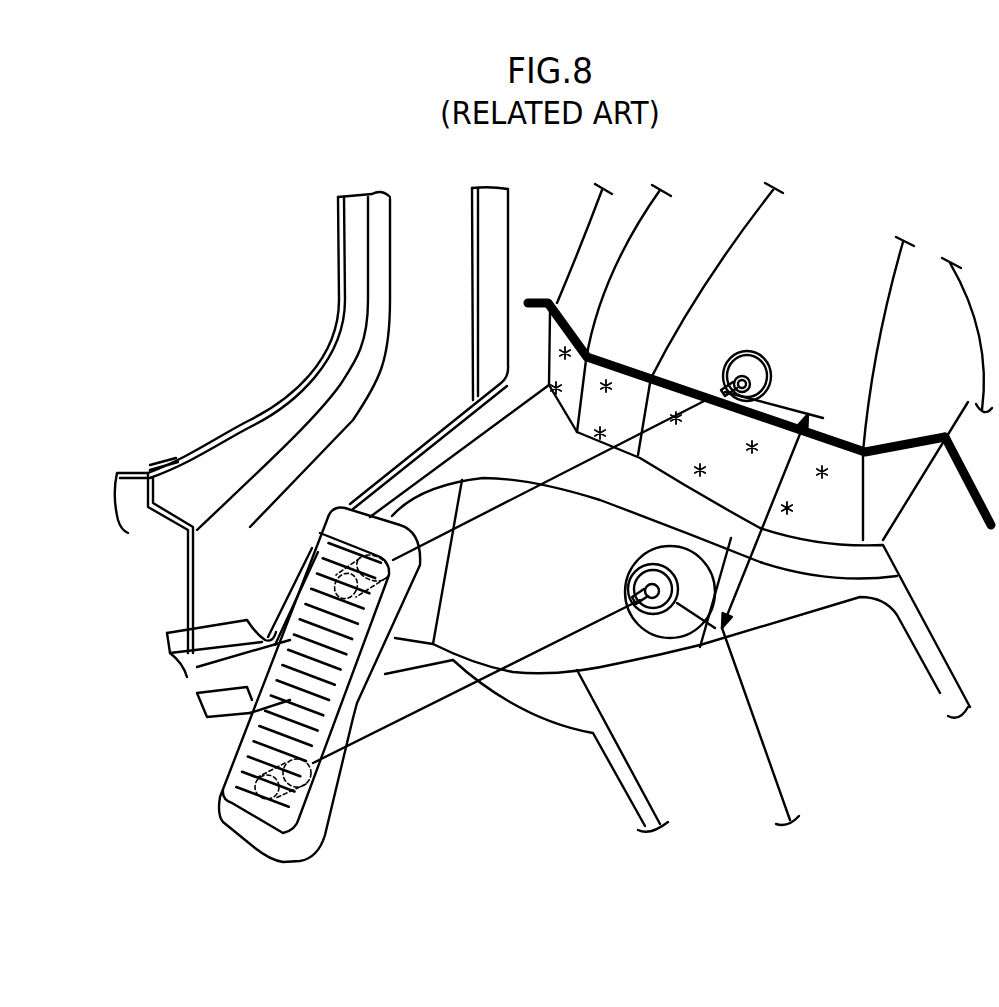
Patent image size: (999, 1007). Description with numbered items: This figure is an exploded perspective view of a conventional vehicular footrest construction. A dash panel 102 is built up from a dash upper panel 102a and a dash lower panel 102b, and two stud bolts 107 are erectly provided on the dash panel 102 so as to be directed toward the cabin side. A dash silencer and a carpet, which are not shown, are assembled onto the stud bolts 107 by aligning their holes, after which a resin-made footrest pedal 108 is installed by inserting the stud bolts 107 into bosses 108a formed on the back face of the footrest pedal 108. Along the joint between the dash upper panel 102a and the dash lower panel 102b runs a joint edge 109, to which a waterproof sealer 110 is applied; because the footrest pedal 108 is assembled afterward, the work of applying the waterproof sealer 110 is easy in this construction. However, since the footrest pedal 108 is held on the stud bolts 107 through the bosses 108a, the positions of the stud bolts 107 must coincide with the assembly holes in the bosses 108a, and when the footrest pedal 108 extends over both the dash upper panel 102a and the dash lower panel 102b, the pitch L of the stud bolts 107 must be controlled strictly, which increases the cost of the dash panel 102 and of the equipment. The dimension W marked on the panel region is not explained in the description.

The dash panel 102 is at (843, 328).
The dash upper panel 102a is at (580, 268).
The dash lower panel 102b is at (557, 370).
The stud bolt 107 is at (726, 362).
The footrest pedal 108 is at (302, 802).
The boss 108a is at (390, 583).
The joint edge 109 is at (985, 526).
The waterproof sealer 110 is at (890, 437).
The pitch of the stud bolts L is at (780, 487).
The width dimension W is at (823, 477).